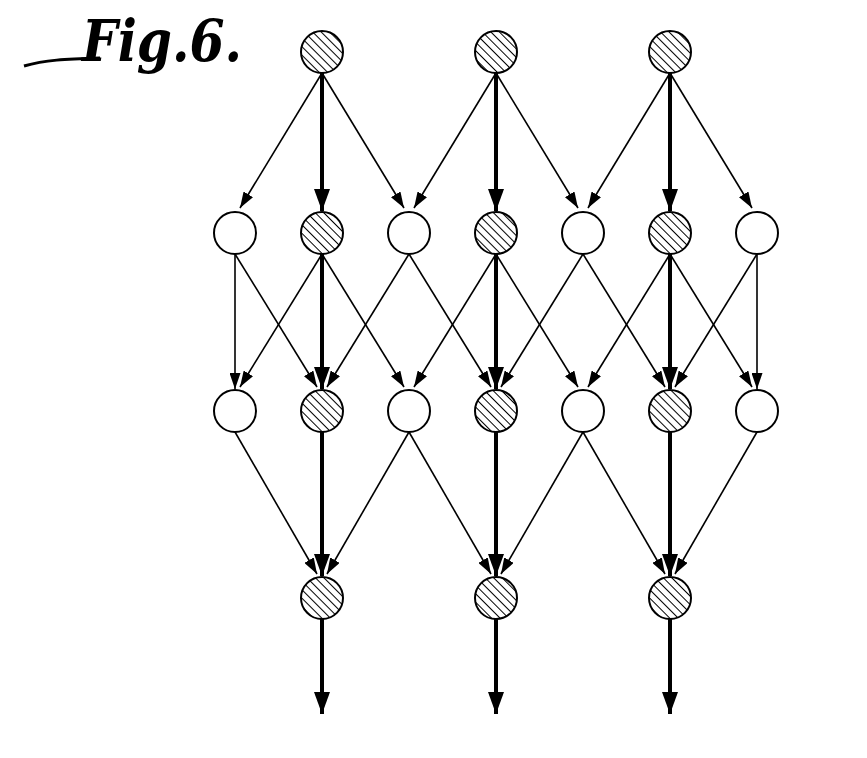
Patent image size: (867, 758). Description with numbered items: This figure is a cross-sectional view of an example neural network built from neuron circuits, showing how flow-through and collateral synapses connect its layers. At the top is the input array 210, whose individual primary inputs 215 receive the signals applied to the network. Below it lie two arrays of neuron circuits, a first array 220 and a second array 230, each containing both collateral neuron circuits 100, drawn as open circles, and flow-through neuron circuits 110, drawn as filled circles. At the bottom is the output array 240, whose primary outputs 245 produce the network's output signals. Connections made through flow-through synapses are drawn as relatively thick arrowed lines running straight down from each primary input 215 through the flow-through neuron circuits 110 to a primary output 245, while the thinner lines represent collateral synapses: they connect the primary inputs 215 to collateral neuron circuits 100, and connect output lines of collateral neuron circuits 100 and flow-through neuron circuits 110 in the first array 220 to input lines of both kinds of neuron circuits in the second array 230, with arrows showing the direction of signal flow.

The collateral neuron circuit 100 is at (215, 225).
The flow-through neuron circuit 110 is at (302, 225).
The input array 210 is at (318, 78).
The primary input 215 is at (341, 41).
The first array of neuron circuits 220 is at (216, 258).
The second array of neuron circuits 230 is at (215, 433).
The output array 240 is at (300, 617).
The primary output 245 is at (302, 598).